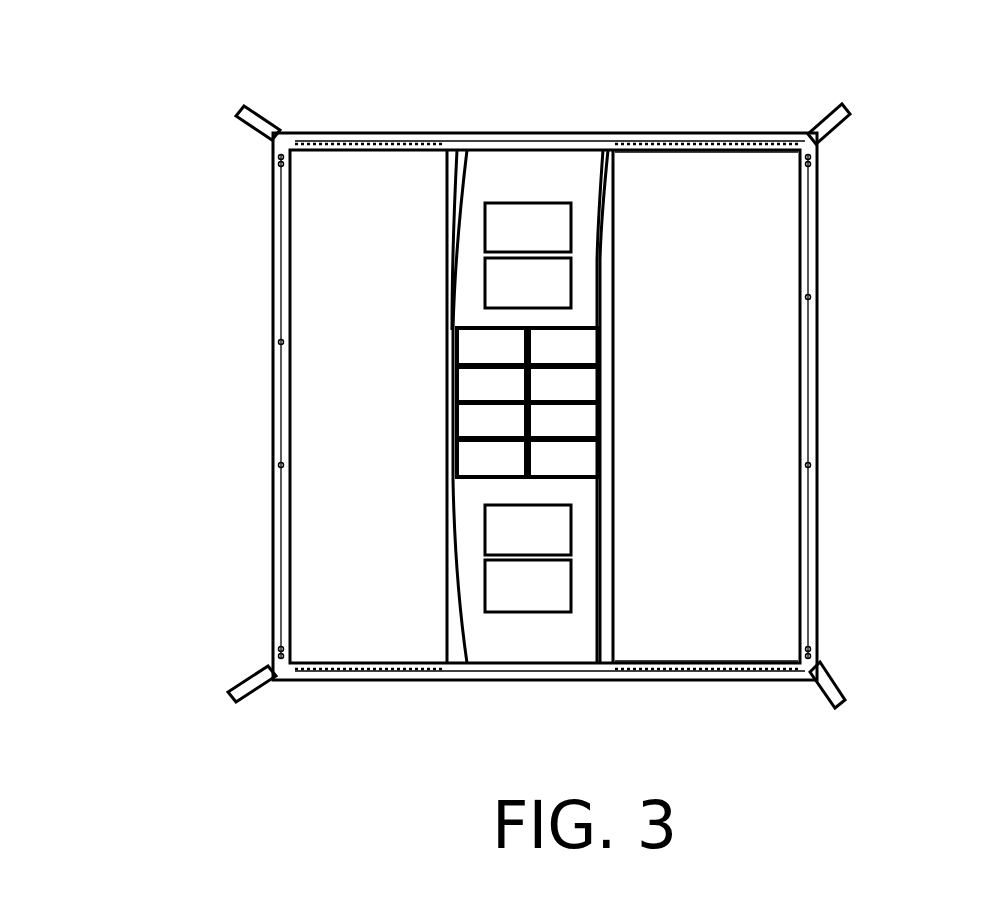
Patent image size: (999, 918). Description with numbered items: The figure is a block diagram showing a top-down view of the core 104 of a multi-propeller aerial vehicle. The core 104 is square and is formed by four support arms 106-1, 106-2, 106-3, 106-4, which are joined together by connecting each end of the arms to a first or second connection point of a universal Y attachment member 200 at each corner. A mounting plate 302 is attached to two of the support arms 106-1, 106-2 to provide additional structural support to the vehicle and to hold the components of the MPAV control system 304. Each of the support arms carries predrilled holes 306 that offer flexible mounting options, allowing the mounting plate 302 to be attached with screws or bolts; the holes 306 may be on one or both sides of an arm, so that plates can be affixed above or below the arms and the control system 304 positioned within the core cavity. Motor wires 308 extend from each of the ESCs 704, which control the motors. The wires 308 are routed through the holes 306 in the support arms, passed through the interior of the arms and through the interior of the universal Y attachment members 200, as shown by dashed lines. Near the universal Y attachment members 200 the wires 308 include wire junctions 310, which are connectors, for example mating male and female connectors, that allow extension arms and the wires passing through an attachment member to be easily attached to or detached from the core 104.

The core 104 is at (444, 91).
The universal Y attachment member 200 is at (275, 148).
The mounting plate 302 is at (510, 178).
The MPAV control system 304 is at (697, 168).
The predrilled holes 306 is at (417, 137).
The motor wires 308 is at (447, 212).
The wire junctions 310 is at (262, 125).
The ESCs 704 is at (473, 356).
The support arm 106-1 is at (540, 133).
The support arm 106-2 is at (815, 414).
The support arm 106-3 is at (517, 680).
The support arm 106-4 is at (275, 407).